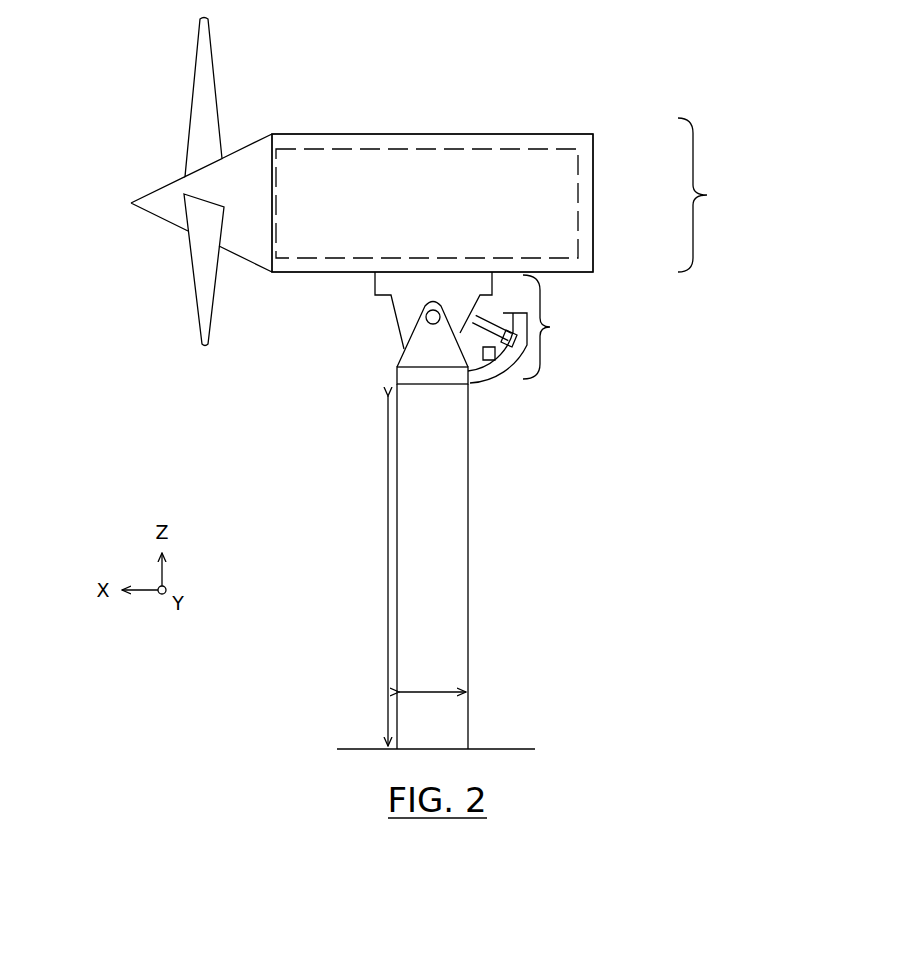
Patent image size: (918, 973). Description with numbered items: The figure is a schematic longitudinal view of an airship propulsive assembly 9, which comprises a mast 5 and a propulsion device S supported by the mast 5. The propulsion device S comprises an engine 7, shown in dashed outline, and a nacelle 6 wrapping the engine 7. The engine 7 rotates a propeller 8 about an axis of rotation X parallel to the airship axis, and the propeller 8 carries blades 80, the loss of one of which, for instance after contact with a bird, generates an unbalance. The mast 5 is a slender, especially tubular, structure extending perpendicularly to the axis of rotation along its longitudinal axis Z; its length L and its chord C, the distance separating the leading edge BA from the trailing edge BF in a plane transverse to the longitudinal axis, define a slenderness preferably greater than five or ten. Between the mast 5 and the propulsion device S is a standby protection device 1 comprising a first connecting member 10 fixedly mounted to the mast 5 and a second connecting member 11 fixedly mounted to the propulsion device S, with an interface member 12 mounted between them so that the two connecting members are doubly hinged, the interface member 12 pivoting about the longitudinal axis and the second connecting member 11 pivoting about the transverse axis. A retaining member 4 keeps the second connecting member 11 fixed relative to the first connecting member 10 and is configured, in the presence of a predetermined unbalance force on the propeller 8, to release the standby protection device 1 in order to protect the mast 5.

The propulsive assembly 9 is at (443, 93).
The nacelle 6 is at (597, 203).
The engine 7 is at (426, 213).
The propeller 8 is at (115, 203).
The blade 80 is at (193, 82).
The propulsion device S is at (704, 195).
The standby protection device 1 is at (525, 327).
The retaining member 4 is at (510, 375).
The second connecting member 11 is at (390, 303).
The interface member 12 is at (400, 352).
The first connecting member 10 is at (397, 375).
The mast 5 is at (425, 490).
The length L is at (377, 571).
The chord C is at (432, 677).
The leading edge BA is at (397, 692).
The trailing edge BF is at (468, 692).